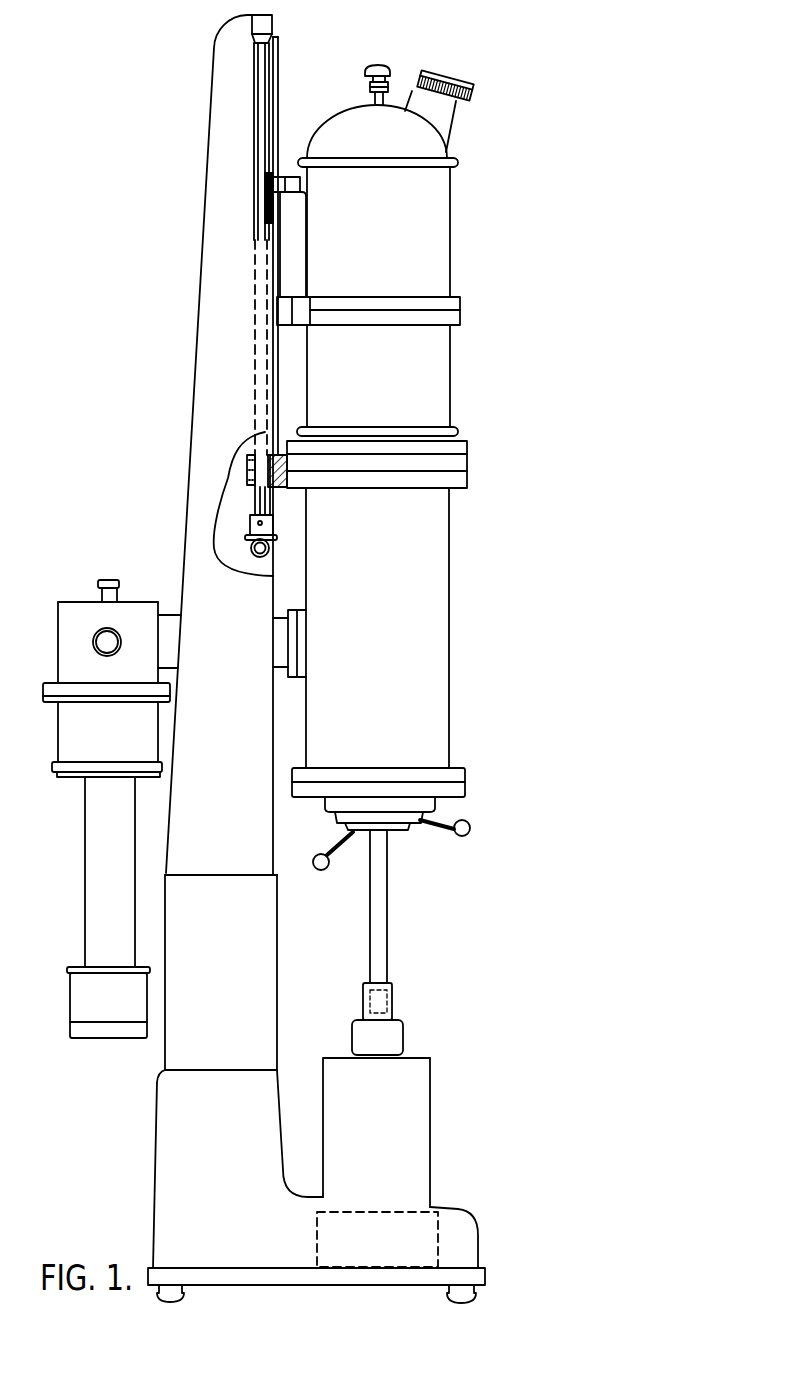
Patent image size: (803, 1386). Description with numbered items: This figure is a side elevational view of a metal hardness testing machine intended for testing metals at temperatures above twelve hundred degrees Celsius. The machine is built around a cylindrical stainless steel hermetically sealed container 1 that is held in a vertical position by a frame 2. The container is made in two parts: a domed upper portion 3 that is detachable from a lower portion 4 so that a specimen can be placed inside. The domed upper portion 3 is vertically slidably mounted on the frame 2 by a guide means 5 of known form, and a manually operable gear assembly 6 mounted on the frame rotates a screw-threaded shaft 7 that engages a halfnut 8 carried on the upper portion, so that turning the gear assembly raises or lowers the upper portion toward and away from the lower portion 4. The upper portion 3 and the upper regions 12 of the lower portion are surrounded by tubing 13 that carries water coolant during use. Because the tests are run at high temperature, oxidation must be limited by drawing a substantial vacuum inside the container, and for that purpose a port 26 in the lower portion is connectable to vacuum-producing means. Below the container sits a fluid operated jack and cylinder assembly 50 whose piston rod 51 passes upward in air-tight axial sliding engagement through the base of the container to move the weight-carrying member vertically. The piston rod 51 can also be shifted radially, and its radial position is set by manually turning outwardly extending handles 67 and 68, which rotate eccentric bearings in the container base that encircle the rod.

The hermetically sealed container 1 is at (432, 521).
The frame 2 is at (218, 187).
The domed upper portion 3 is at (418, 203).
The lower portion 4 is at (425, 640).
The guide means 5 is at (278, 177).
The manually operable gear assembly 6 is at (248, 535).
The screw-threaded shaft 7 is at (257, 122).
The halfnut 8 is at (267, 222).
The upper regions of the lower portion 12 is at (427, 358).
The tubing 13 is at (427, 430).
The port 26 is at (297, 668).
The fluid operated jack and cylinder assembly 50 is at (417, 1093).
The piston rod 51 is at (378, 948).
The handle 67 is at (466, 838).
The handle 68 is at (322, 870).